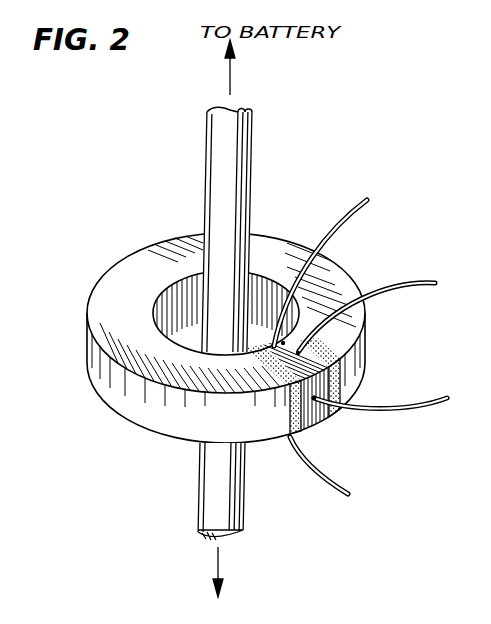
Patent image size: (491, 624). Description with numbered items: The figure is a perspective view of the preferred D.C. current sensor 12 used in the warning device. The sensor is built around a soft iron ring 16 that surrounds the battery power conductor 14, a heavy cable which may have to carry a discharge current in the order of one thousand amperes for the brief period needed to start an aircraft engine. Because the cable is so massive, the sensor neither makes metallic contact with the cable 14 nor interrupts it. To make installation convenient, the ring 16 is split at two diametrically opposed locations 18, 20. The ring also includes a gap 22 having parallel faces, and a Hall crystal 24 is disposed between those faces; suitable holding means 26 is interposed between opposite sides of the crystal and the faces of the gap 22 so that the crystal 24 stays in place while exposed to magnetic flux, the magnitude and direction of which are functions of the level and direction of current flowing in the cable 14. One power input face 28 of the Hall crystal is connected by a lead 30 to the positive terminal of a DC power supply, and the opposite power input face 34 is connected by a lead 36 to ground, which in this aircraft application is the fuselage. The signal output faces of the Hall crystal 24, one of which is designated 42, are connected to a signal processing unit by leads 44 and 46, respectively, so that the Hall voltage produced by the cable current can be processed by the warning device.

The D.C. current sensor 12 is at (222, 348).
The battery power conductor 14 is at (249, 156).
The soft iron ring 16 is at (175, 437).
The split location 18 is at (140, 355).
The split location 20 is at (303, 270).
The gap 22 is at (262, 357).
The Hall crystal 24 is at (285, 343).
The holding means 26 is at (317, 345).
The power input face 28 is at (270, 334).
The lead 30 is at (407, 283).
The power input face 34 is at (313, 420).
The lead 36 is at (323, 468).
The signal output face 42 is at (318, 374).
The lead 44 is at (340, 218).
The lead 46 is at (403, 410).